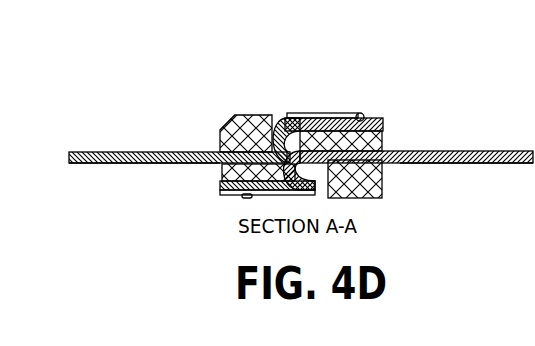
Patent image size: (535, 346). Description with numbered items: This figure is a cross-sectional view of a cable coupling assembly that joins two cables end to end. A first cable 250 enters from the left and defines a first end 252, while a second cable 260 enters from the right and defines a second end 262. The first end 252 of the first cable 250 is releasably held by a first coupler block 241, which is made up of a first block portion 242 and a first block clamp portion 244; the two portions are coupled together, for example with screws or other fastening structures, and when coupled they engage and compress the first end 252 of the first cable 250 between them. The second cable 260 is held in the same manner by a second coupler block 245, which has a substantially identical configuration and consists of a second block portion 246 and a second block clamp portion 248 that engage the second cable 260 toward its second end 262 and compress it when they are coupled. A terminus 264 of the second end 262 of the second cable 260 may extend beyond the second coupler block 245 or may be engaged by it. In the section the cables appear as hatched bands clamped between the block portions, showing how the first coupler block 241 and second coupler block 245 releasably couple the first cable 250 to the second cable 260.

The first cable 250 is at (128, 151).
The first end 252 is at (171, 182).
The second cable 260 is at (470, 151).
The second end 262 is at (396, 182).
The first block clamp portion 244 is at (220, 140).
The first coupler block 241 is at (217, 108).
The first block portion 242 is at (222, 174).
The second block portion 246 is at (365, 112).
The terminus 264 is at (383, 122).
The second coupler block 245 is at (400, 142).
The second block clamp portion 248 is at (352, 180).